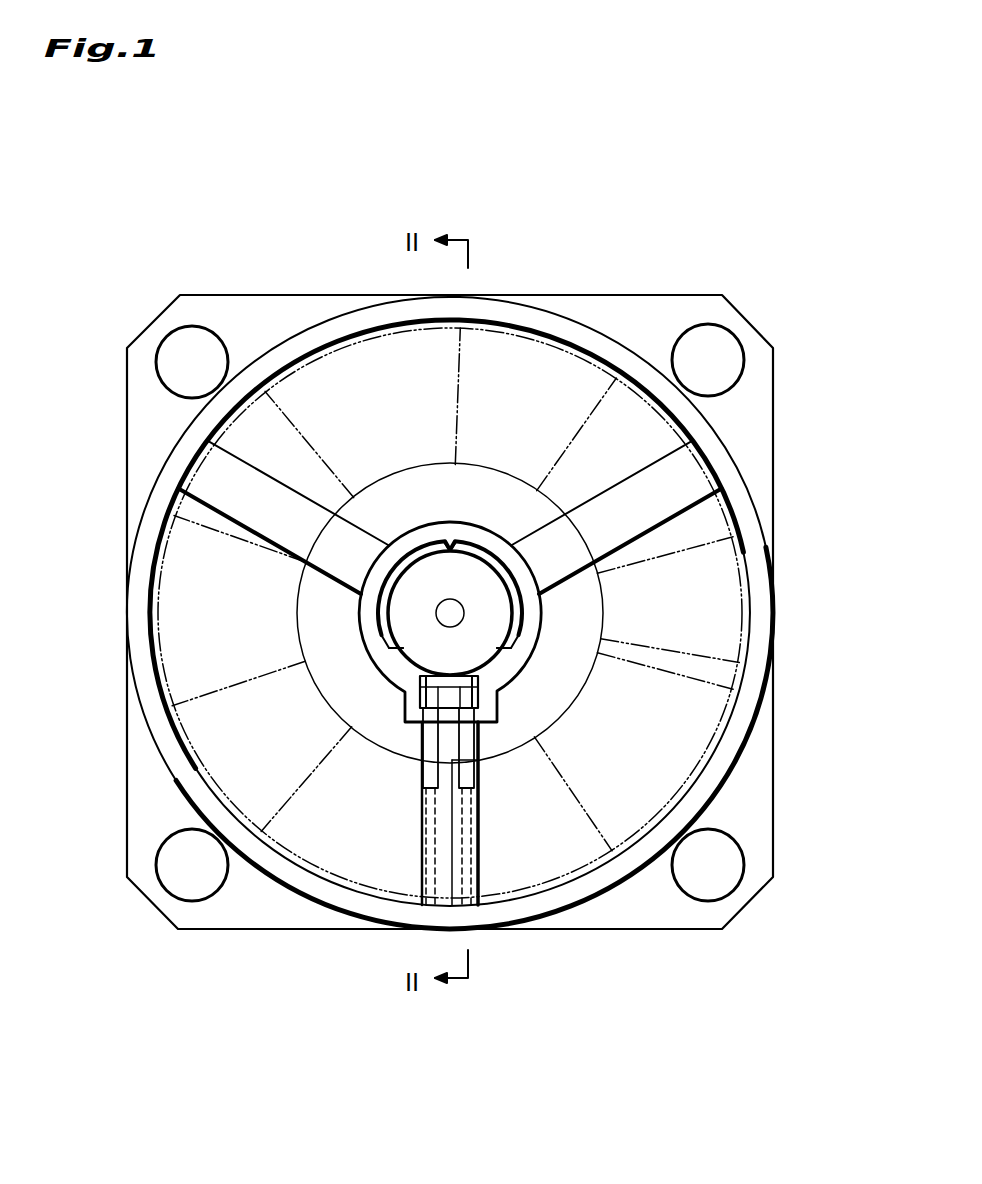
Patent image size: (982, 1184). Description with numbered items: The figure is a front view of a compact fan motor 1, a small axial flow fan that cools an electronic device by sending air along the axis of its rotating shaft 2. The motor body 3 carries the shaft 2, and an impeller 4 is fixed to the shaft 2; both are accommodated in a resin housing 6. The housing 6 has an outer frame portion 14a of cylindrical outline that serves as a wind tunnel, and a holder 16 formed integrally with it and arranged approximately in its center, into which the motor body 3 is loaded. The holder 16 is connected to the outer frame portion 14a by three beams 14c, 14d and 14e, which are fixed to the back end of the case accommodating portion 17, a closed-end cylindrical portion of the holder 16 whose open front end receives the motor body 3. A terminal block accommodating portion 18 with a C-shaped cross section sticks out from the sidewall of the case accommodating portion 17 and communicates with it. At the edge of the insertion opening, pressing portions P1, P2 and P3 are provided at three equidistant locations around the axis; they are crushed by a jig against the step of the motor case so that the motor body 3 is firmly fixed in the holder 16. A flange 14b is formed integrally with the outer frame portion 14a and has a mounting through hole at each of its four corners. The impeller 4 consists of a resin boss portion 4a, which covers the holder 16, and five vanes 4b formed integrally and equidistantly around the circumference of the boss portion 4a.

The compact fan motor 1 is at (646, 199).
The rotating shaft 2 is at (448, 613).
The motor body 3 is at (405, 600).
The impeller 4 is at (481, 356).
The boss portion 4a is at (600, 640).
The vanes 4b is at (383, 375).
The housing 6 is at (775, 450).
The outer frame portion 14a is at (610, 345).
The flange 14b is at (752, 487).
The beam 14c is at (420, 853).
The beam 14d is at (265, 470).
The beam 14e is at (645, 468).
The holder 16 is at (544, 612).
The case accommodating portion 17 is at (508, 690).
The terminal block accommodating portion 18 is at (403, 703).
The pressing portion P1 is at (452, 549).
The pressing portion P2 is at (390, 647).
The pressing portion P3 is at (509, 647).